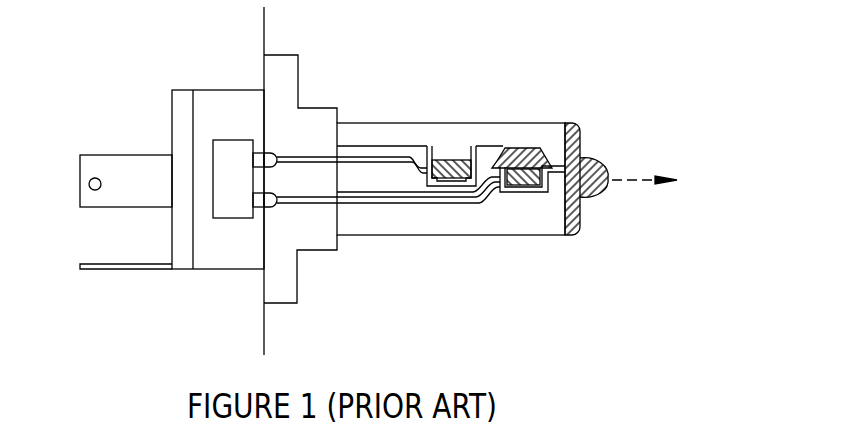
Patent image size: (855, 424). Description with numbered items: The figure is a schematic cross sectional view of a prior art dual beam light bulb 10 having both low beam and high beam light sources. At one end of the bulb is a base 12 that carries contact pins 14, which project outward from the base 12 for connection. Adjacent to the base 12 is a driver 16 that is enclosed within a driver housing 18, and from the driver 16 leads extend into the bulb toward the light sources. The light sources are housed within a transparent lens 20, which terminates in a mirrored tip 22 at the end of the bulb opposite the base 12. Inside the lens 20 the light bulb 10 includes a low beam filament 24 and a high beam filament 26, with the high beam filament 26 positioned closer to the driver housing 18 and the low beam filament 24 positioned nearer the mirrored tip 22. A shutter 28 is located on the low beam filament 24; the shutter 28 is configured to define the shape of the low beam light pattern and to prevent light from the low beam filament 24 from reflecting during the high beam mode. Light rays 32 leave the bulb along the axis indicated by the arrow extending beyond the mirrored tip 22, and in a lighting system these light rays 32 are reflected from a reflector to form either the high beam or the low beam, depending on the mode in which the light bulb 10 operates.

The dual beam light bulb 10 is at (370, 181).
The base 12 is at (293, 292).
The contact pins 14 is at (153, 163).
The driver 16 is at (237, 153).
The driver housing 18 is at (222, 97).
The transparent lens 20 is at (472, 236).
The mirrored tip 22 is at (580, 215).
The low beam filament 24 is at (530, 190).
The high beam filament 26 is at (447, 160).
The shutter 28 is at (525, 150).
The light rays 32 is at (638, 178).